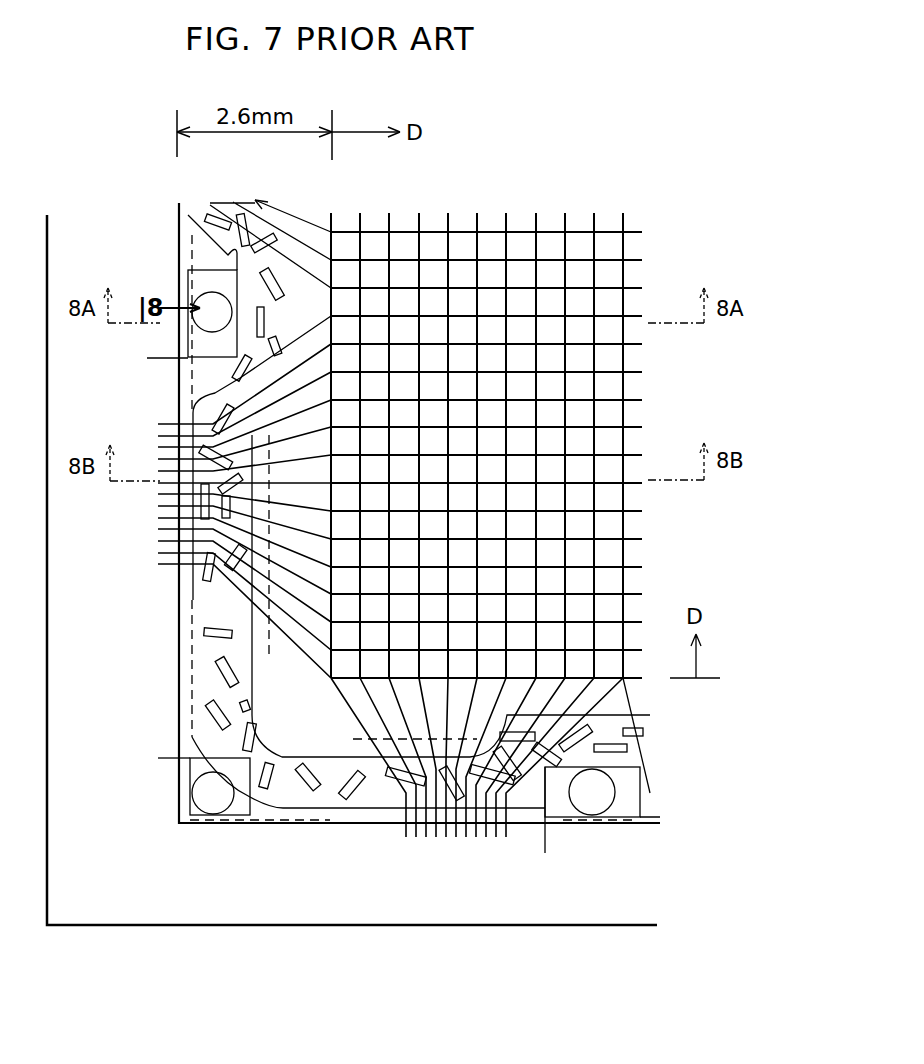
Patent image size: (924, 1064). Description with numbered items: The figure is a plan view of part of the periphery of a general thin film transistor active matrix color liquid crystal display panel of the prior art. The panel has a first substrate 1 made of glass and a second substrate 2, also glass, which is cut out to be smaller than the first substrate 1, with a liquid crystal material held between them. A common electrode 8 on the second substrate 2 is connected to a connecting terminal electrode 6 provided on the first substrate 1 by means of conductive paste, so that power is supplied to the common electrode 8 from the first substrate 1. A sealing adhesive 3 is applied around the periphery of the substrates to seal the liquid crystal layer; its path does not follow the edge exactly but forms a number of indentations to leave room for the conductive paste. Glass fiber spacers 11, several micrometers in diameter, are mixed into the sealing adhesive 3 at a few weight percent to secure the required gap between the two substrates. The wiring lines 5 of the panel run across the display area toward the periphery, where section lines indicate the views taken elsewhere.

The first substrate 1 is at (385, 928).
The second substrate 2 is at (522, 823).
The sealing adhesive 3 is at (330, 808).
The wiring lines 5 is at (585, 230).
The connecting terminal electrode 6 is at (188, 272).
The common electrode 8 is at (190, 233).
The glass fiber spacers 11 is at (212, 631).